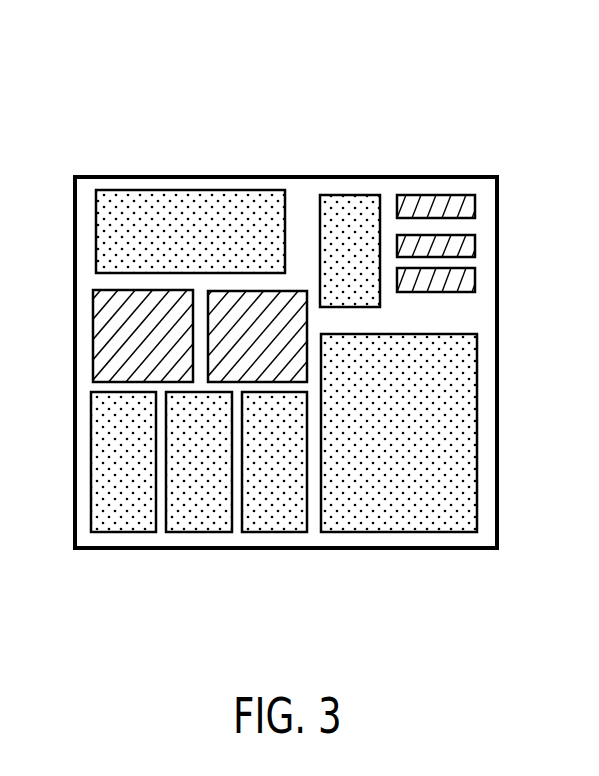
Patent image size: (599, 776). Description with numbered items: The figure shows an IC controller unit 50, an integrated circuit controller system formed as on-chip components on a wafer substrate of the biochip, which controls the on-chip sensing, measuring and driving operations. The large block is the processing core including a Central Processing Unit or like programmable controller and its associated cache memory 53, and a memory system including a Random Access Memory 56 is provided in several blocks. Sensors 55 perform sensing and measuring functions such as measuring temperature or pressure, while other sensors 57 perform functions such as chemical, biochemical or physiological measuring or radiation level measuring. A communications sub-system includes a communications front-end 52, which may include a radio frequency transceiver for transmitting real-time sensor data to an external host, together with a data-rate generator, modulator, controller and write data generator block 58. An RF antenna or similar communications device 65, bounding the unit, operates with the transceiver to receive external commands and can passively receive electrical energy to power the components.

The IC controller unit 50 is at (130, 80).
The communications front-end 52 is at (208, 212).
The processing core with CPU and cache memory 53 is at (410, 444).
The sensors 55 is at (478, 207).
The Random Access Memory 56 is at (263, 495).
The sensors 57 is at (228, 320).
The data-rate generator, modulator, controller, write data generator block 58 is at (350, 217).
The RF antenna 65 is at (357, 550).